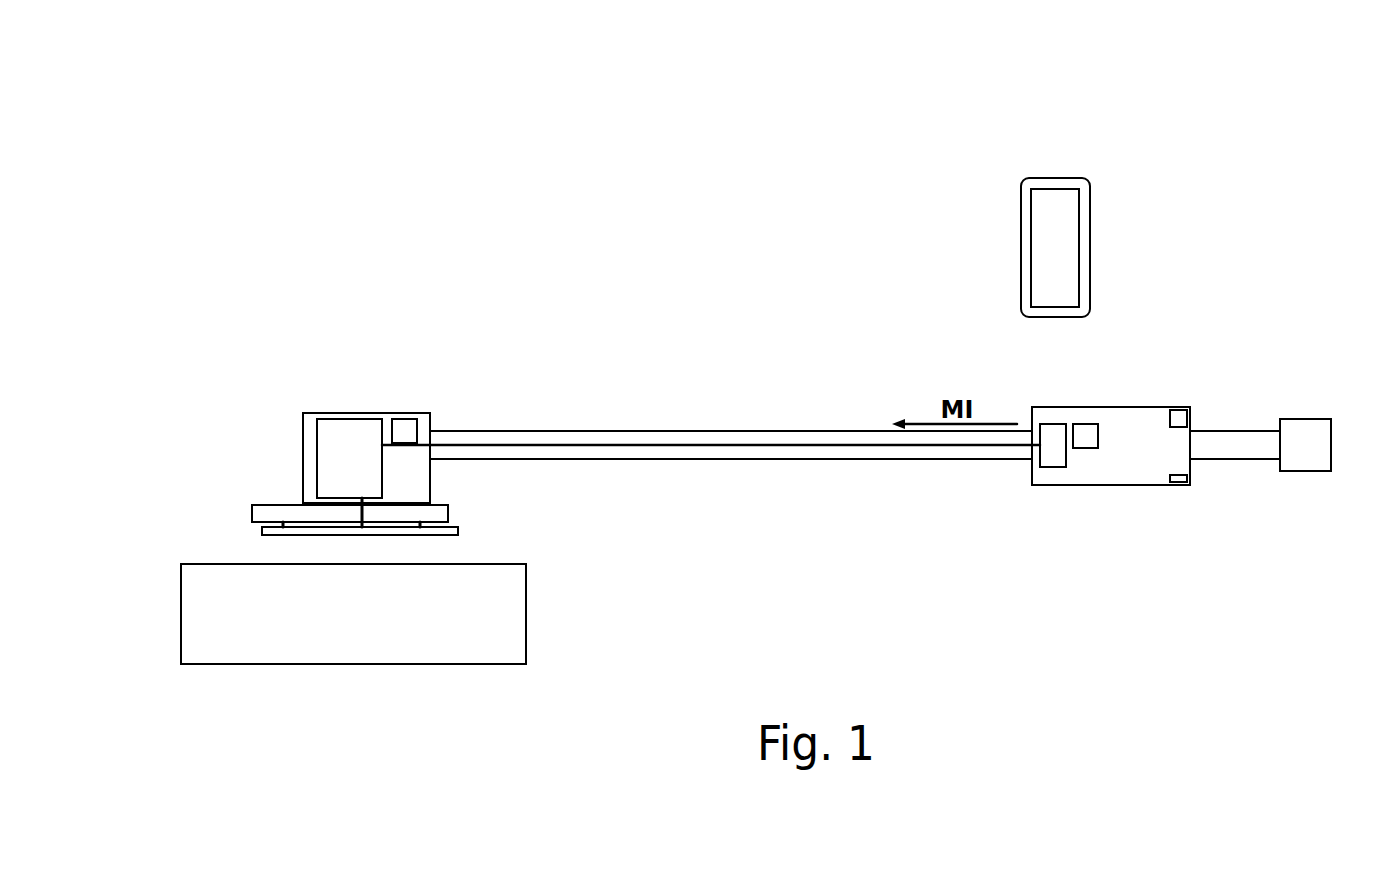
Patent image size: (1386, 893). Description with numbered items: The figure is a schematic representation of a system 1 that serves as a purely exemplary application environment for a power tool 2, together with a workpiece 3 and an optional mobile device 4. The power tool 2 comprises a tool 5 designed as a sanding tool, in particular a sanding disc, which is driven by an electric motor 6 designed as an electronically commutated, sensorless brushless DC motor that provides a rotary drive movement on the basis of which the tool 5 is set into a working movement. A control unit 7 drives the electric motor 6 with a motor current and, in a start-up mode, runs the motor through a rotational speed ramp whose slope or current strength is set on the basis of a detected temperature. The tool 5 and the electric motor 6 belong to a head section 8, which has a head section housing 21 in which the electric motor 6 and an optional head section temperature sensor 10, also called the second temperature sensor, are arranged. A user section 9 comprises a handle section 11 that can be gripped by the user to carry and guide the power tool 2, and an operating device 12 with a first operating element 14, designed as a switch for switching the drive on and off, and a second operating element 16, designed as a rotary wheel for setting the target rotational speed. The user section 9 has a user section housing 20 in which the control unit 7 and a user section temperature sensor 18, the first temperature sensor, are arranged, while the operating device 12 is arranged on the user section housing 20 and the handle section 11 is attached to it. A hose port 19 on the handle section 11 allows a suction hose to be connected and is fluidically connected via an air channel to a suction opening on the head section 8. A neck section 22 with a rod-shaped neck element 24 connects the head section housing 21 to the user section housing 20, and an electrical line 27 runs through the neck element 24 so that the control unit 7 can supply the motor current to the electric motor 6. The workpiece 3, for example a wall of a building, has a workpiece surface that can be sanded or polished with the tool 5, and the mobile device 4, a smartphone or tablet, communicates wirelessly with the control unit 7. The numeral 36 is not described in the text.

The system 1 is at (306, 97).
The power tool 2 is at (482, 351).
The workpiece 3 is at (187, 595).
The mobile device 4 is at (1087, 235).
The tool 5 is at (457, 532).
The electric motor 6 is at (338, 425).
The control unit 7 is at (1052, 462).
The head section 8 is at (285, 402).
The user section 9 is at (1239, 318).
The head section temperature sensor 10 is at (406, 430).
The handle section 11 is at (1239, 440).
The operating device 12 is at (1197, 443).
The first operating element 14 is at (1182, 415).
The second operating element 16 is at (1182, 478).
The user section temperature sensor 18 is at (1085, 440).
The hose port 19 is at (1313, 430).
The user section housing 20 is at (1085, 407).
The head section housing 21 is at (302, 465).
The neck section 22 is at (721, 415).
The neck element 24 is at (598, 435).
The electrical line 27 is at (813, 445).
The support plate 36 is at (262, 512).